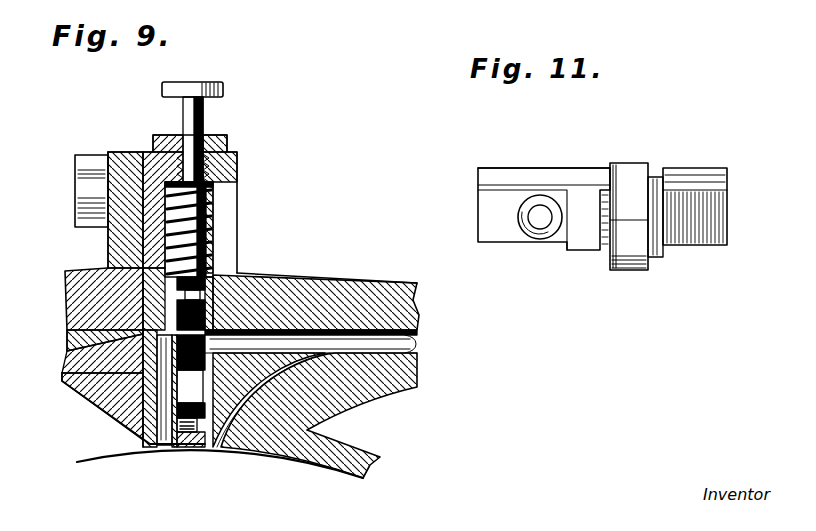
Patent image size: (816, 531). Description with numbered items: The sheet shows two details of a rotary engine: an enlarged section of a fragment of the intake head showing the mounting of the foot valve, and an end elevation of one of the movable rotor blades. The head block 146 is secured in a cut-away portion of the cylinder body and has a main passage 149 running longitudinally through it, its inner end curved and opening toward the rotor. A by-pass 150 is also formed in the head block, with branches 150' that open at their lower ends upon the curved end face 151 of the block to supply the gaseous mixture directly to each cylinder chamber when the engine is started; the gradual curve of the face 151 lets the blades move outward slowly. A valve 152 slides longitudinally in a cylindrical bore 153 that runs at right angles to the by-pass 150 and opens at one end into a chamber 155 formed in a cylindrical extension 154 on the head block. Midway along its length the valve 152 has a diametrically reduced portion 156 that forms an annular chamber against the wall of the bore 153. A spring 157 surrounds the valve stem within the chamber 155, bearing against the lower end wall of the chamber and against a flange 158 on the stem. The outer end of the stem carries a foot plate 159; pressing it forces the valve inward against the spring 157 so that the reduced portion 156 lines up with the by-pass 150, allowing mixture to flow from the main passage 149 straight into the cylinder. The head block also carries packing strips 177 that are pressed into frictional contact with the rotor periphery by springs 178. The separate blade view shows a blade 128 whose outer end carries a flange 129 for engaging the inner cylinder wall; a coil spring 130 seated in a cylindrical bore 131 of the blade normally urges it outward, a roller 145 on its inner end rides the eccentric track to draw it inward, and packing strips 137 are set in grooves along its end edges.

In FIG. 11, the blade 128 is at (485, 218).
In FIG. 11, the flange 129 is at (556, 172).
In FIG. 11, the coil spring 130 is at (547, 238).
In FIG. 11, the cylindrical bore 131 is at (526, 233).
In FIG. 11, the packing strip 137 is at (728, 218).
In FIG. 11, the roller 145 is at (638, 180).
In FIG. 9, the head block 146 is at (373, 279).
In FIG. 9, the main passage 149 is at (418, 344).
In FIG. 9, the by-pass 150 is at (316, 297).
In FIG. 9, the branch 150' is at (220, 469).
In FIG. 9, the curved end face 151 is at (83, 398).
In FIG. 9, the valve 152 is at (175, 330).
In FIG. 9, the cylindrical bore 153 is at (170, 376).
In FIG. 9, the cylindrical extension 154 is at (238, 166).
In FIG. 9, the chamber 155 is at (219, 210).
In FIG. 9, the reduced portion 156 is at (207, 300).
In FIG. 9, the spring 157 is at (219, 232).
In FIG. 9, the flange 158 is at (160, 180).
In FIG. 9, the foot plate 159 is at (223, 88).
In FIG. 9, the packing strip 177 is at (188, 452).
In FIG. 9, the spring 178 is at (226, 458).